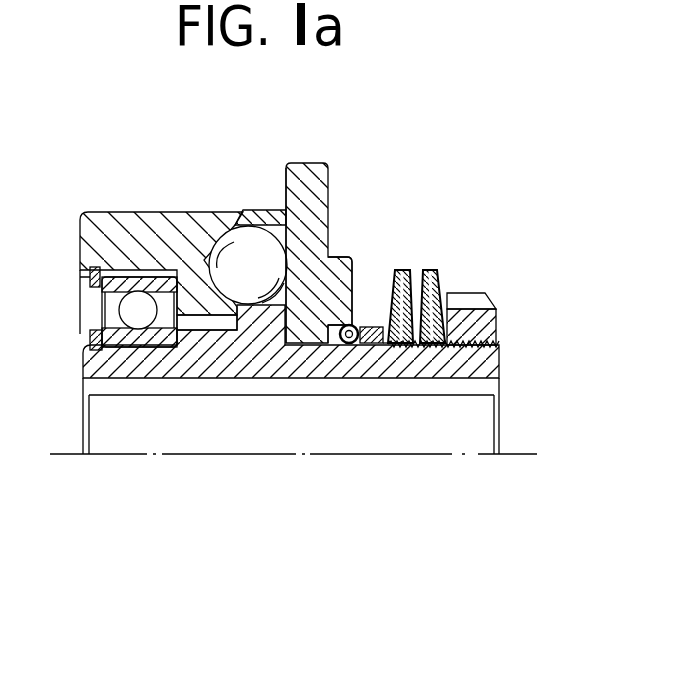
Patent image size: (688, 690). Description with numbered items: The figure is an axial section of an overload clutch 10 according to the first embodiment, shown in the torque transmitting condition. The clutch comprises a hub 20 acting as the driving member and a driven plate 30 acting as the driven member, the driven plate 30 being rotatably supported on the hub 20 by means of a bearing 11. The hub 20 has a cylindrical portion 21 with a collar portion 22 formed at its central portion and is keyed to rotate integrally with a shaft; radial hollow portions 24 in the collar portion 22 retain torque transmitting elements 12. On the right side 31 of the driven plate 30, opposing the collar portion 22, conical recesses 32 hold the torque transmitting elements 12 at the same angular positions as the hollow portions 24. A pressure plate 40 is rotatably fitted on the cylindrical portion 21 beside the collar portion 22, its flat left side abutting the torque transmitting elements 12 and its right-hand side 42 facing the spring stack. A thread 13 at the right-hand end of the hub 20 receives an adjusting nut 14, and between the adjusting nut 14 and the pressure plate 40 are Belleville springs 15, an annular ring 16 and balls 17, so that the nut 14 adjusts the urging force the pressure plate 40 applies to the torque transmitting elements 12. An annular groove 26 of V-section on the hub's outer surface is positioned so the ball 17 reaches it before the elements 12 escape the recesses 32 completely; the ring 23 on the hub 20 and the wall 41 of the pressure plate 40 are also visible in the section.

The overload clutch 10 is at (500, 222).
The bearing 11 is at (90, 285).
The torque transmitting elements 12 is at (213, 244).
The thread 13 is at (497, 341).
The adjusting nut 14 is at (496, 315).
The Belleville springs 15 is at (400, 272).
The annular ring 16 is at (374, 332).
The balls 17 is at (361, 328).
The hub 20 is at (399, 404).
The cylindrical portion 21 is at (250, 366).
The collar portion 22 is at (247, 217).
The ring 23 is at (153, 390).
The hollow portions 24 is at (305, 232).
The annular groove 26 is at (352, 344).
The driven plate 30 is at (88, 252).
The right side of the driven plate 31 is at (230, 240).
The conical recesses 32 is at (118, 214).
The pressure plate 40 is at (300, 172).
The side wall 41 is at (288, 212).
The right-hand side of the pressure plate 42 is at (348, 322).